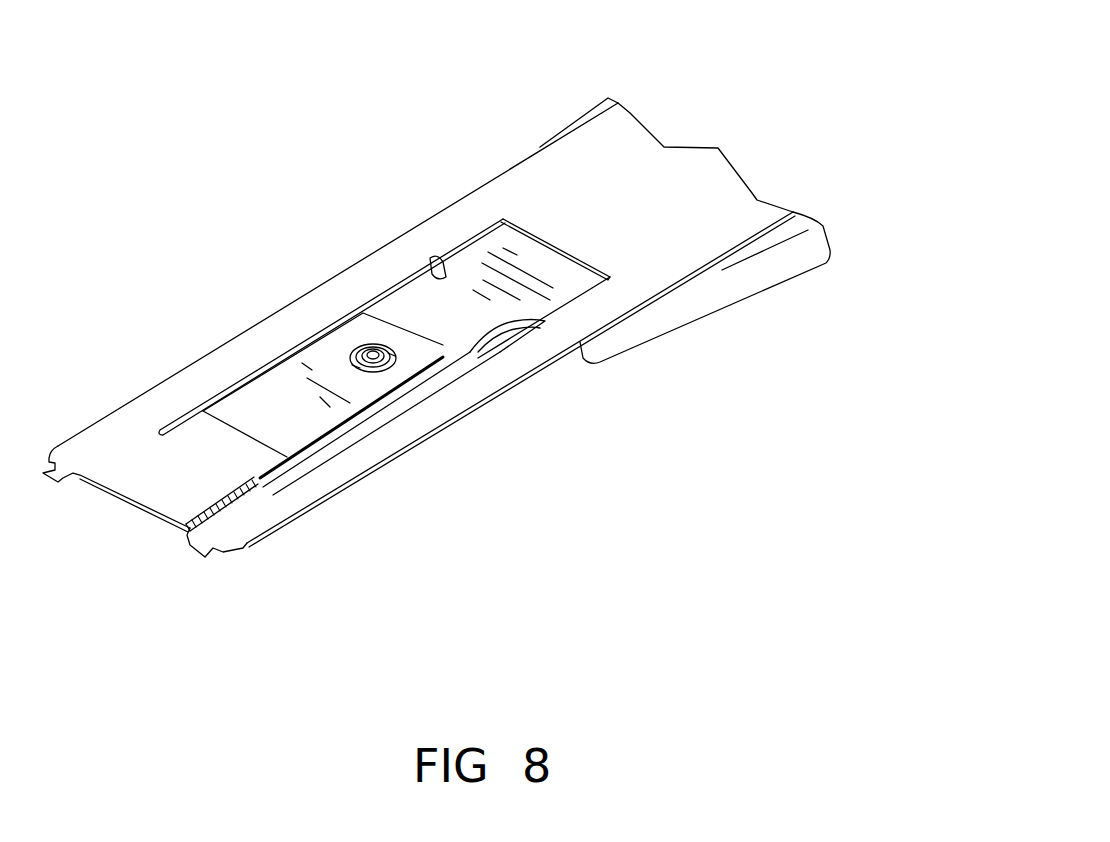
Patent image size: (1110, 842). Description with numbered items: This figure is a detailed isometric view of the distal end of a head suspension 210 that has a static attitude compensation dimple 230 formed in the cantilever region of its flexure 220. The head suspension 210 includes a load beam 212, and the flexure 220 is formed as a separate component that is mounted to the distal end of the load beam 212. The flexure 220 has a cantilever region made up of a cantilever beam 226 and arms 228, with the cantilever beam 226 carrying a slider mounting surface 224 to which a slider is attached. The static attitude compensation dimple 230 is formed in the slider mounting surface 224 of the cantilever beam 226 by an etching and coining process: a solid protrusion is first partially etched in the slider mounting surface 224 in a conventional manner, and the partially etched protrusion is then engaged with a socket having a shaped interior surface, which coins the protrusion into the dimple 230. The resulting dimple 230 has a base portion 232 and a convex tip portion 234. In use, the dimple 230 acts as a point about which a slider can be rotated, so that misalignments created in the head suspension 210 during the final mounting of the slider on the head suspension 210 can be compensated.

The head suspension 210 is at (637, 68).
The load beam 212 is at (777, 260).
The flexure 220 is at (728, 210).
The slider mounting surface 224 is at (360, 335).
The cantilever beam 226 is at (290, 430).
The arms 228 is at (373, 443).
The static attitude compensation dimple 230 is at (353, 350).
The base portion 232 is at (352, 365).
The convex tip portion 234 is at (388, 353).